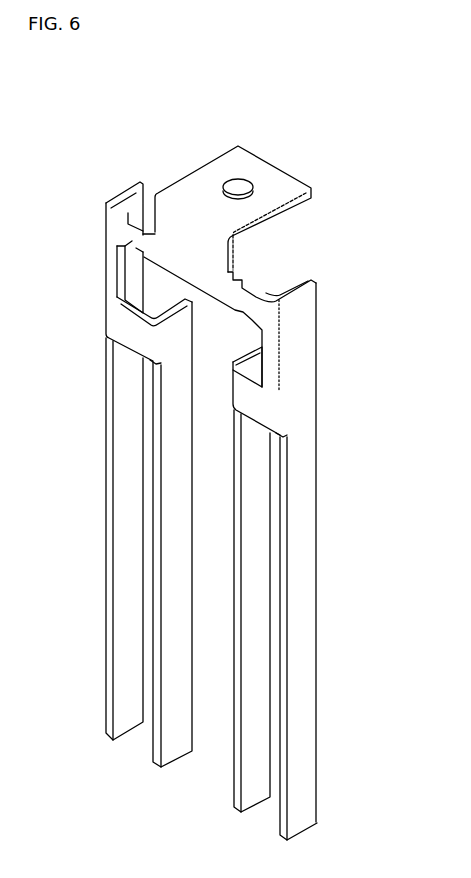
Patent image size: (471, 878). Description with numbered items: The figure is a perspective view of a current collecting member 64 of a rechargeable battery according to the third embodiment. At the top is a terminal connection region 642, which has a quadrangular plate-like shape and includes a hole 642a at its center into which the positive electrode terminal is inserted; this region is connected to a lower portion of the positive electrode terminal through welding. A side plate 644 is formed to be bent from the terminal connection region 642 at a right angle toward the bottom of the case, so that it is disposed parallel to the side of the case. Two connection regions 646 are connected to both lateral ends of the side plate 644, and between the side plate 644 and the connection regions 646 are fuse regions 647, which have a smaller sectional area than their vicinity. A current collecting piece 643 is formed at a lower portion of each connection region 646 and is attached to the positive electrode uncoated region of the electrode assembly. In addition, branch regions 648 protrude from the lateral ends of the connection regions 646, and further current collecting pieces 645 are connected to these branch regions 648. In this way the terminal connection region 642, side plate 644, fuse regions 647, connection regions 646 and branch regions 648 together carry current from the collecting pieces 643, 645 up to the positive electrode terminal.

The current collecting member 64 is at (179, 160).
The terminal connection region 642 is at (268, 178).
The hole 642a is at (234, 179).
The current collecting piece 643 is at (128, 573).
The side plate 644 is at (192, 246).
The current collecting piece 645 is at (177, 622).
The connection region 646 is at (270, 358).
The fuse region 647 is at (148, 256).
The branch region 648 is at (133, 335).